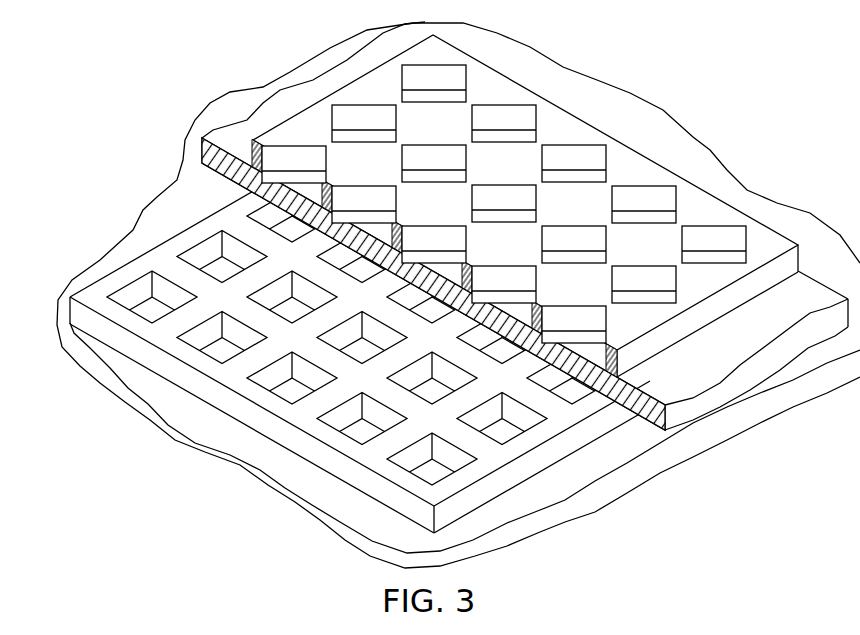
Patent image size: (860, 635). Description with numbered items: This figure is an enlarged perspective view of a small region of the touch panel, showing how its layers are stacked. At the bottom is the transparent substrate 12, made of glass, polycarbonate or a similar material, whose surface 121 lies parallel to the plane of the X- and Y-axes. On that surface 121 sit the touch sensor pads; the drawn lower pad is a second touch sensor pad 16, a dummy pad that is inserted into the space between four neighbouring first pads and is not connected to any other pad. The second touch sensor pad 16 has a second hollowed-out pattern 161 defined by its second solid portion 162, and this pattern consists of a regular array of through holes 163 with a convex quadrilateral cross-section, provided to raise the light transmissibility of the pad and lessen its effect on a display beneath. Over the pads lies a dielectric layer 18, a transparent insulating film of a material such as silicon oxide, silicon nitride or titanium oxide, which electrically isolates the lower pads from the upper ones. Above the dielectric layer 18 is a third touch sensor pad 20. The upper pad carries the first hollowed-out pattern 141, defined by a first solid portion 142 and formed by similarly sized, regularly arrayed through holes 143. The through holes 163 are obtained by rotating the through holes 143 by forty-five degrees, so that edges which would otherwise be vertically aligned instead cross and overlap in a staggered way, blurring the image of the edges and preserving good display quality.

The transparent substrate 12 is at (290, 508).
The surface 121 is at (230, 432).
The second touch sensor pad 16 is at (82, 294).
The second hollowed-out pattern 161 is at (118, 316).
The second solid portion 162 is at (157, 337).
The through holes 163 is at (128, 282).
The dielectric layer 18 is at (651, 419).
The third touch sensor pad 20 is at (313, 127).
The first hollowed-out pattern 141 is at (576, 143).
The first solid portion 142 is at (607, 163).
The through holes 143 is at (657, 178).